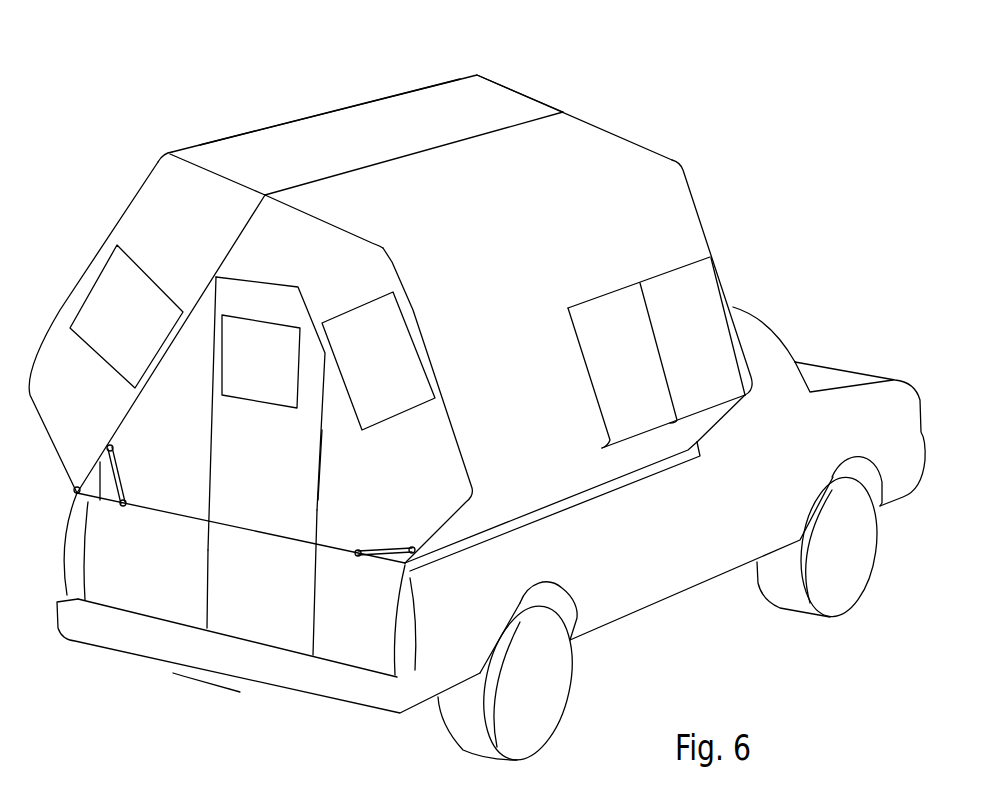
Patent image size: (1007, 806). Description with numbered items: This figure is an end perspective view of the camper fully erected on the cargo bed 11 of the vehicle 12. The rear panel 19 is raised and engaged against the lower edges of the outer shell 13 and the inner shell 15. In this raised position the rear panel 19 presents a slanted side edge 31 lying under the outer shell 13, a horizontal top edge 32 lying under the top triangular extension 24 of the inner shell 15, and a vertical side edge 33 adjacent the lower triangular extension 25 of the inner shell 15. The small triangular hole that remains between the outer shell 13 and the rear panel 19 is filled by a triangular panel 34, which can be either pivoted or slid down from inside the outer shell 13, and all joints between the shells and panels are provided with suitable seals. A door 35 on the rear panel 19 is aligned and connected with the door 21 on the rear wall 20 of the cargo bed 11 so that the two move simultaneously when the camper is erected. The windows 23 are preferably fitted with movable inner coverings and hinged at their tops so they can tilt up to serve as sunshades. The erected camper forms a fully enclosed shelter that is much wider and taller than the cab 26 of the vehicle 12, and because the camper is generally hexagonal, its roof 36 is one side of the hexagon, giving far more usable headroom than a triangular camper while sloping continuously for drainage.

The cargo bed 11 is at (578, 507).
The vehicle 12 is at (843, 370).
The outer shell 13 is at (522, 95).
The inner shell 15 is at (630, 142).
The rear panel 19 is at (145, 505).
The rear wall 20 is at (172, 522).
The door 21 is at (262, 543).
The windows 23 is at (668, 278).
The top triangular extension 24 is at (245, 245).
The lower triangular extension 25 is at (337, 548).
The cab 26 is at (752, 317).
The slanted side edge 31 is at (128, 407).
The horizontal top edge 32 is at (272, 283).
The vertical side edge 33 is at (322, 447).
The triangular panel 34 is at (85, 485).
The door 35 is at (310, 490).
The roof 36 is at (378, 113).